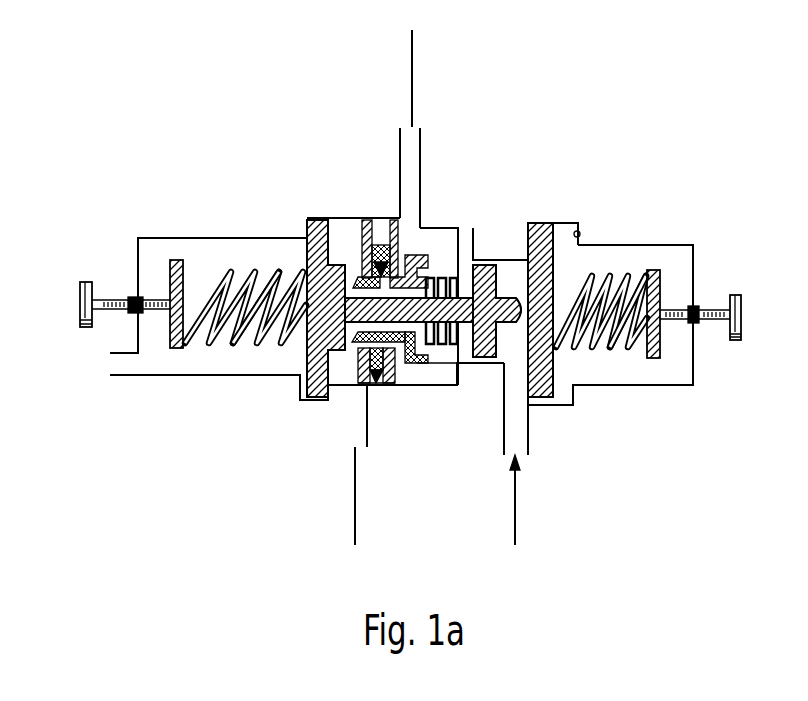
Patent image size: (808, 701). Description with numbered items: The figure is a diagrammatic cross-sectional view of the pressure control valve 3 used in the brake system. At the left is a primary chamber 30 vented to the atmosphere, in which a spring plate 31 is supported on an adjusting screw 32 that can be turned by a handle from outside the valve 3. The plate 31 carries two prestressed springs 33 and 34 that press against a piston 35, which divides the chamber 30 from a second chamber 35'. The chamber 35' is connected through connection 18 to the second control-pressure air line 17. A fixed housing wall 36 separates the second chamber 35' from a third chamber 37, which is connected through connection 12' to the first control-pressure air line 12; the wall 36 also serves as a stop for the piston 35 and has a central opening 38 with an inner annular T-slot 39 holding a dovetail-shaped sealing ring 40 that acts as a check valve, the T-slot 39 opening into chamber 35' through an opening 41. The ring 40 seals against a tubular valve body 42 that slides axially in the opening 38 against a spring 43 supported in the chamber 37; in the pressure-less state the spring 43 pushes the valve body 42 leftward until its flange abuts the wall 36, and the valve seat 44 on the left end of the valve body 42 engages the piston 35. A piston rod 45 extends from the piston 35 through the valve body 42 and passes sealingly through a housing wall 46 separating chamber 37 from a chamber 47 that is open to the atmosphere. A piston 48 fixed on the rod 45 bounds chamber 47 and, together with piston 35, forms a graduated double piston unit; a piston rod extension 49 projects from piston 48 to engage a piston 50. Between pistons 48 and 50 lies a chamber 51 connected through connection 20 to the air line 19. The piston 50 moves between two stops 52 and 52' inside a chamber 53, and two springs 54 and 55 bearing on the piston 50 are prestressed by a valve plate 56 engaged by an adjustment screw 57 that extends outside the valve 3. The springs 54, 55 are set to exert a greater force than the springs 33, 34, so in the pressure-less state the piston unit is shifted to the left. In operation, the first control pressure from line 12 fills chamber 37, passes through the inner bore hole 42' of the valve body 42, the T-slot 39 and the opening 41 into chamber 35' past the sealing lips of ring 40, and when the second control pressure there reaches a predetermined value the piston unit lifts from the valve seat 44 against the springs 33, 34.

The pressure control valve 3 is at (624, 432).
The Cv1 air line 12 is at (433, 78).
The connection 12' is at (434, 178).
The Cv2 air line 17 is at (354, 493).
The connection 18 is at (366, 406).
The air line 19 is at (517, 493).
The connection 20 is at (505, 405).
The primary chamber 30 is at (152, 243).
The spring plate 31 is at (171, 282).
The adjusting screw 32 is at (83, 300).
The prestressed spring 33 is at (214, 266).
The prestressed spring 34 is at (222, 332).
The piston 35 is at (293, 297).
The second chamber 35' is at (300, 390).
The housing wall 36 is at (352, 386).
The third chamber 37 is at (412, 365).
The central opening 38 is at (357, 280).
The annular T-slot 39 is at (380, 256).
The sealing ring 40 is at (382, 386).
The opening 41 is at (362, 250).
The tubular valve body 42 is at (418, 259).
The inner bore hole 42' is at (410, 378).
The spring 43 is at (440, 345).
The valve seat 44 is at (358, 343).
The piston rod 45 is at (488, 358).
The housing wall 46 is at (450, 283).
The chamber 47 is at (462, 238).
The piston 48 is at (483, 264).
The piston rod extension 49 is at (521, 300).
The piston 50 is at (548, 246).
The chamber 51 is at (505, 376).
The stop 52 is at (552, 318).
The stop 52' is at (604, 220).
The chamber 53 is at (632, 252).
The spring 54 is at (588, 352).
The spring 55 is at (628, 352).
The valve plate 56 is at (661, 286).
The adjustment screw 57 is at (742, 303).